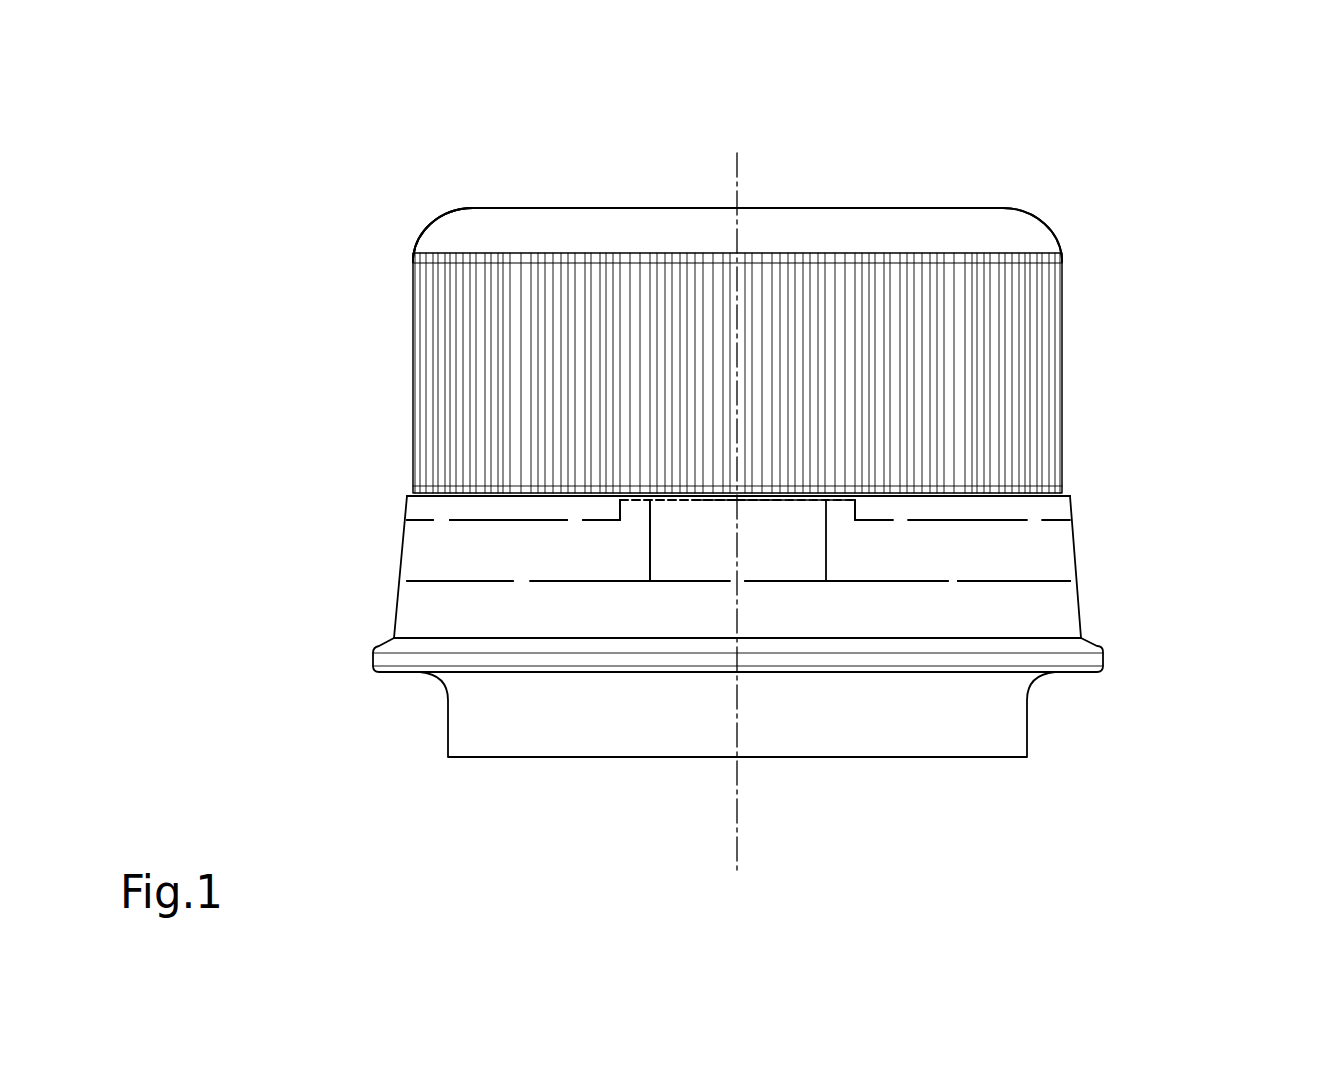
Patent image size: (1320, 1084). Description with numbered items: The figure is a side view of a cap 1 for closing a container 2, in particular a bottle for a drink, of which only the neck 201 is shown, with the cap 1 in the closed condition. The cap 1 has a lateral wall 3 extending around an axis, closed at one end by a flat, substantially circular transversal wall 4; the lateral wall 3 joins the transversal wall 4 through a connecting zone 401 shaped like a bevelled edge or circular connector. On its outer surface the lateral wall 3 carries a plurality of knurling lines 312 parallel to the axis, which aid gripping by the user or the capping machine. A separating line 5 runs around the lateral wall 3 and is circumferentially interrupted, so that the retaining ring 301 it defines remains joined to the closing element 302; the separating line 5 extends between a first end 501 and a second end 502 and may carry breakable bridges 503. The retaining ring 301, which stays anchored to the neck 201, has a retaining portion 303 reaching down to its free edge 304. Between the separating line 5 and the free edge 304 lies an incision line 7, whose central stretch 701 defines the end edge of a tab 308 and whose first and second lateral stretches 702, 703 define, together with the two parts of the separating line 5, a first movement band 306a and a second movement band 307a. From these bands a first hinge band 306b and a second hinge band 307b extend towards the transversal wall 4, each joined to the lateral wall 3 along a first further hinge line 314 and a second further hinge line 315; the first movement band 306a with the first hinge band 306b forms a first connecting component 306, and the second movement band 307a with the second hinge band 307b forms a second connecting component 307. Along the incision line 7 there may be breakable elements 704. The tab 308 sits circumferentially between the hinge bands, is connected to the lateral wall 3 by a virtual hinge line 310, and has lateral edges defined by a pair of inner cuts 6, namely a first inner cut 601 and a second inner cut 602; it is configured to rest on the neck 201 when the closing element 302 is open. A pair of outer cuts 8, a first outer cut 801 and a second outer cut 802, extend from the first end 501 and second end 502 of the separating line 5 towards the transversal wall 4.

The cap 1 is at (288, 208).
The container 2 is at (1043, 768).
The lateral wall 3 is at (1075, 425).
The transversal wall 4 is at (496, 196).
The separating line 5 is at (482, 509).
The inner cuts 6 is at (641, 574).
The incision line 7 is at (895, 575).
The outer cuts 8 is at (868, 500).
The neck 201 is at (388, 682).
The retaining ring 301 is at (1090, 600).
The closing element 302 is at (1060, 298).
The retaining portion 303 is at (528, 608).
The free edge 304 is at (1040, 637).
The first connecting component 306 is at (392, 571).
The first movement band 306a is at (427, 552).
The first hinge band 306b is at (632, 512).
The second connecting component 307 is at (1045, 542).
The second movement band 307a is at (998, 540).
The second hinge band 307b is at (840, 512).
The tab 308 is at (717, 562).
The hinge line 310 is at (783, 500).
The knurling lines 312 is at (978, 291).
The first further hinge line 314 is at (637, 500).
The second further hinge line 315 is at (837, 500).
The connecting zone 401 is at (440, 225).
The first end 501 is at (618, 518).
The second end 502 is at (858, 520).
The breakable bridges 503 is at (443, 523).
The first inner cut 601 is at (648, 542).
The second inner cut 602 is at (826, 561).
The central stretch 701 is at (782, 582).
The first lateral stretch 702 is at (485, 582).
The second lateral stretch 703 is at (988, 582).
The breakable elements 704 is at (952, 582).
The first outer cut 801 is at (618, 503).
The second outer cut 802 is at (857, 501).